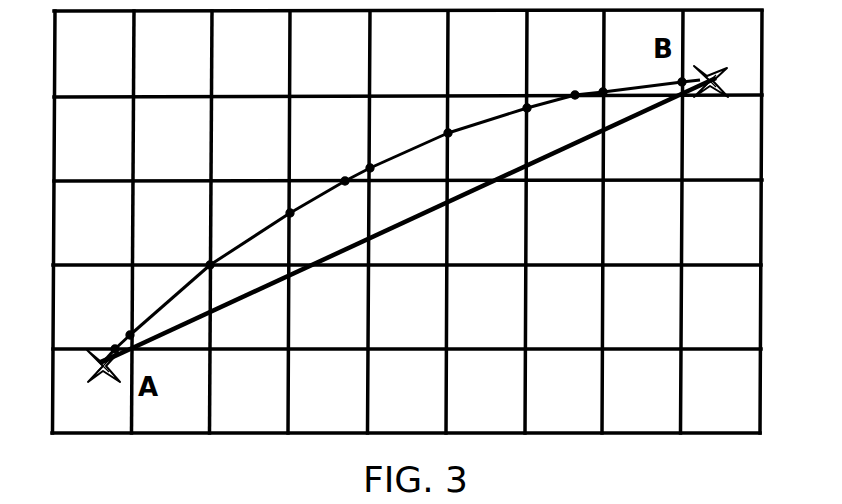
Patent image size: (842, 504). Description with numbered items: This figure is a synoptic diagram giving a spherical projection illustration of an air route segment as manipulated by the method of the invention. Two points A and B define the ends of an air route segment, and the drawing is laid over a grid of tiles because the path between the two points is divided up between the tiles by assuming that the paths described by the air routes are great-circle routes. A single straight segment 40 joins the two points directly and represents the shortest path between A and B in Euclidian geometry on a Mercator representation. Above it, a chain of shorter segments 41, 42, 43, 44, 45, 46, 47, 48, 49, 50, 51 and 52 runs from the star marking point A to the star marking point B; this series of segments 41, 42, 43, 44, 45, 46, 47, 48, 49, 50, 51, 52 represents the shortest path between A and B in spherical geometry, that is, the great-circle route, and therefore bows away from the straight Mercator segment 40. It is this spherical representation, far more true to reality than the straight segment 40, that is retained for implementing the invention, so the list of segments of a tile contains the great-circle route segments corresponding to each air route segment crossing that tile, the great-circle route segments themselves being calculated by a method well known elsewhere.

The segment 40 is at (390, 233).
The segment 41 is at (102, 348).
The segment 42 is at (140, 346).
The segment 43 is at (163, 306).
The segment 44 is at (250, 238).
The segment 45 is at (325, 194).
The segment 46 is at (352, 175).
The segment 47 is at (410, 149).
The segment 48 is at (487, 121).
The segment 49 is at (553, 102).
The segment 50 is at (592, 91).
The segment 51 is at (638, 87).
The segment 52 is at (697, 78).